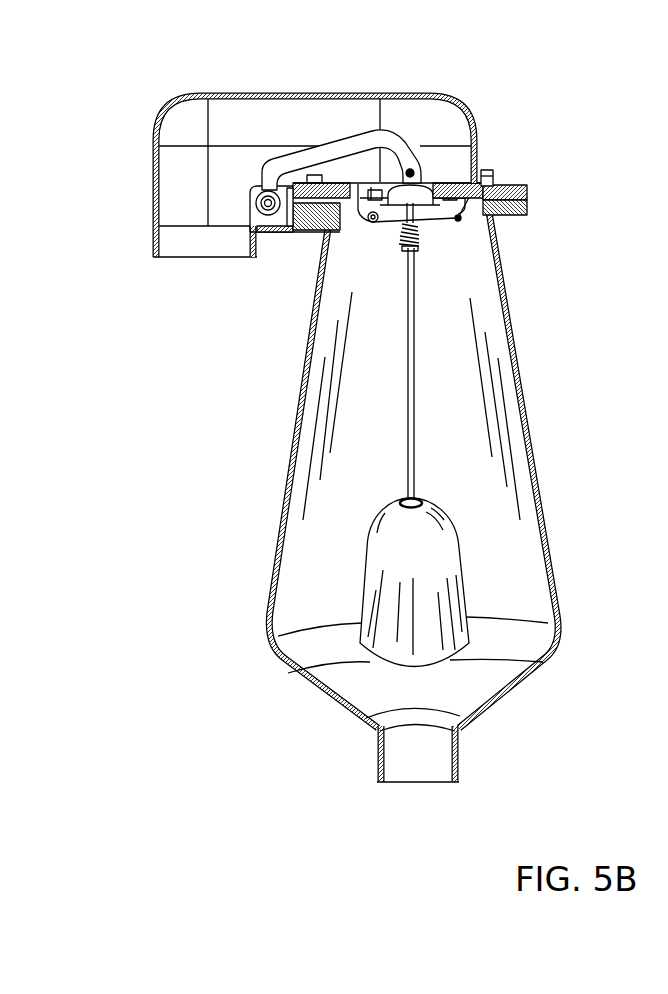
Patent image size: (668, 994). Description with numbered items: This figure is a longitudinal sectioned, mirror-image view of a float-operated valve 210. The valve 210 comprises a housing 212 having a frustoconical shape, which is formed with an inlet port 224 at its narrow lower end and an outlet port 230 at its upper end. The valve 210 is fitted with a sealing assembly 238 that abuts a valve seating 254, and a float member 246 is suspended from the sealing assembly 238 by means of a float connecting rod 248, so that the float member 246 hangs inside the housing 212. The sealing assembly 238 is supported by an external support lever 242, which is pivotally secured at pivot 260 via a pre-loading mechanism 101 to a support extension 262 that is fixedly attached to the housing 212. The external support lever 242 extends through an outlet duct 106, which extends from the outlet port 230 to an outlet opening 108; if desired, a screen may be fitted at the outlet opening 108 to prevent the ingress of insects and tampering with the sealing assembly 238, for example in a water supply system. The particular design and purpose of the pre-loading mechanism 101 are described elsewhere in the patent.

The pre-loading mechanism 101 is at (273, 222).
The outlet duct 106 is at (284, 93).
The outlet opening 108 is at (175, 258).
The valve 210 is at (326, 512).
The housing 212 is at (283, 548).
The inlet port 224 is at (414, 750).
The outlet port 230 is at (483, 170).
The sealing assembly 238 is at (470, 262).
The external support lever 242 is at (397, 150).
The float member 246 is at (422, 548).
The float connecting rod 248 is at (413, 440).
The valve seating 254 is at (522, 186).
The pivot 260 is at (255, 199).
The support extension 262 is at (283, 231).